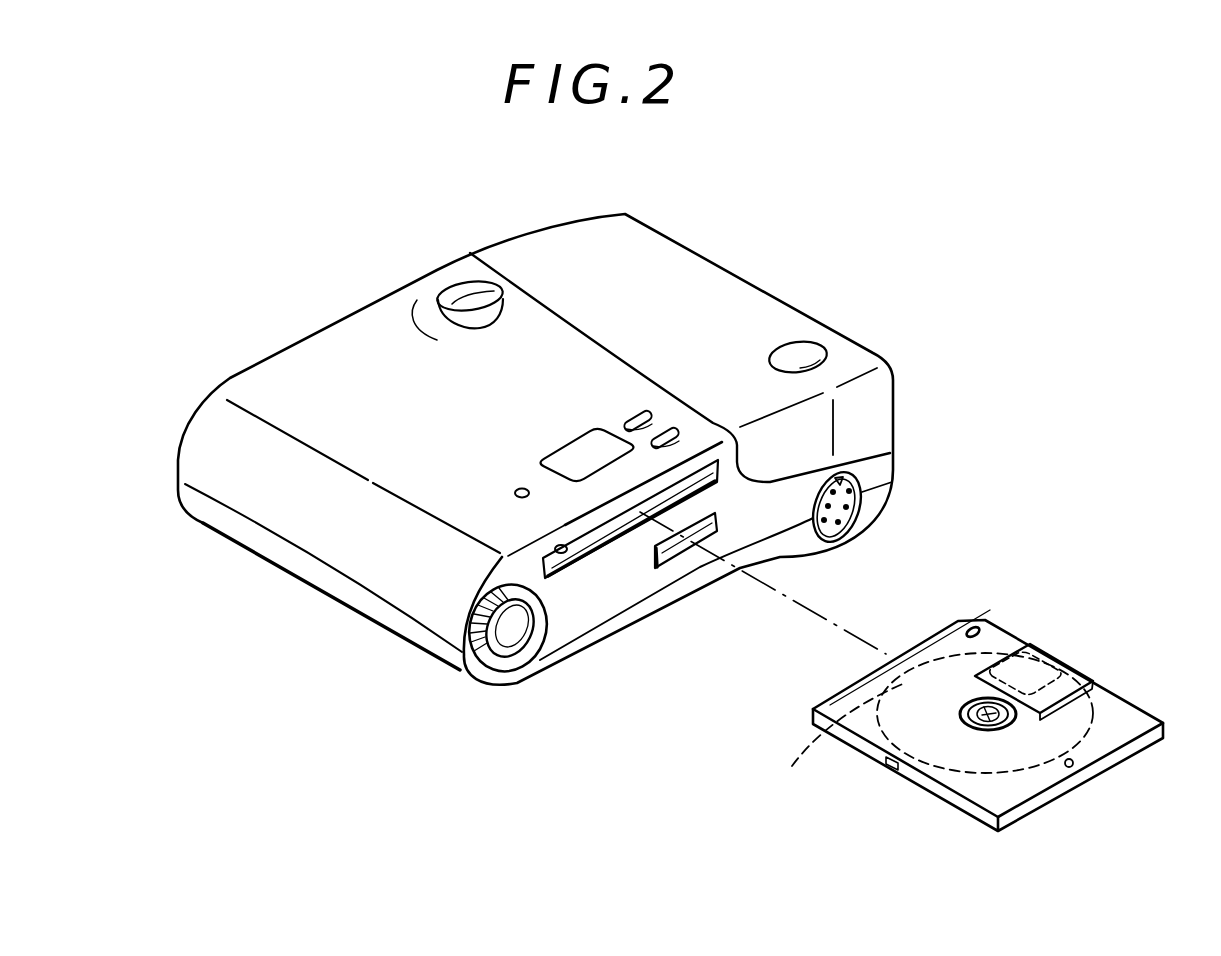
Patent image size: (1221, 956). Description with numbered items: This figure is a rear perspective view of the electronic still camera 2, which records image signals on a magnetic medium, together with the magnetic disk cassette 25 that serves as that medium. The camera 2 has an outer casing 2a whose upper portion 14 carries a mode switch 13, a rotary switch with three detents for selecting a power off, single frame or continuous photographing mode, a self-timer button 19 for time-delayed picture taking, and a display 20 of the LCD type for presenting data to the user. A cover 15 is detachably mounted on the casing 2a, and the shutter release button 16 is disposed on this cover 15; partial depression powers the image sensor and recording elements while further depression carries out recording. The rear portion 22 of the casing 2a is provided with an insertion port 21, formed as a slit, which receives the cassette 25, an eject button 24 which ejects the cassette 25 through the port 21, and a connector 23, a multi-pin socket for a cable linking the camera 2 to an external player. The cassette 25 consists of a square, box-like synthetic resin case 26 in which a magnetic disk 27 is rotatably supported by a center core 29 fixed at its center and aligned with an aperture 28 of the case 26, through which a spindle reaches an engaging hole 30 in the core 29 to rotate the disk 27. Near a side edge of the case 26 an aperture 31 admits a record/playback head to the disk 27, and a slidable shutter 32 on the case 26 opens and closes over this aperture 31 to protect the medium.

The electronic still camera 2 is at (827, 258).
The outer casing 2a is at (305, 360).
The mode switch 13 is at (458, 290).
The upper portion 14 is at (385, 362).
The cover 15 is at (680, 262).
The shutter release button 16 is at (805, 348).
The self-timer button 19 is at (522, 489).
The display 20 is at (580, 457).
The insertion port 21 is at (556, 548).
The rear portion 22 is at (600, 605).
The connector 23 is at (837, 513).
The eject button 24 is at (673, 552).
The magnetic disk cassette 25 is at (1092, 647).
The case 26 is at (850, 693).
The magnetic disk 27 is at (815, 748).
The aperture 28 is at (985, 697).
The center core 29 is at (1002, 724).
The engaging hole 30 is at (975, 720).
The aperture 31 is at (1068, 668).
The shutter 32 is at (1030, 645).